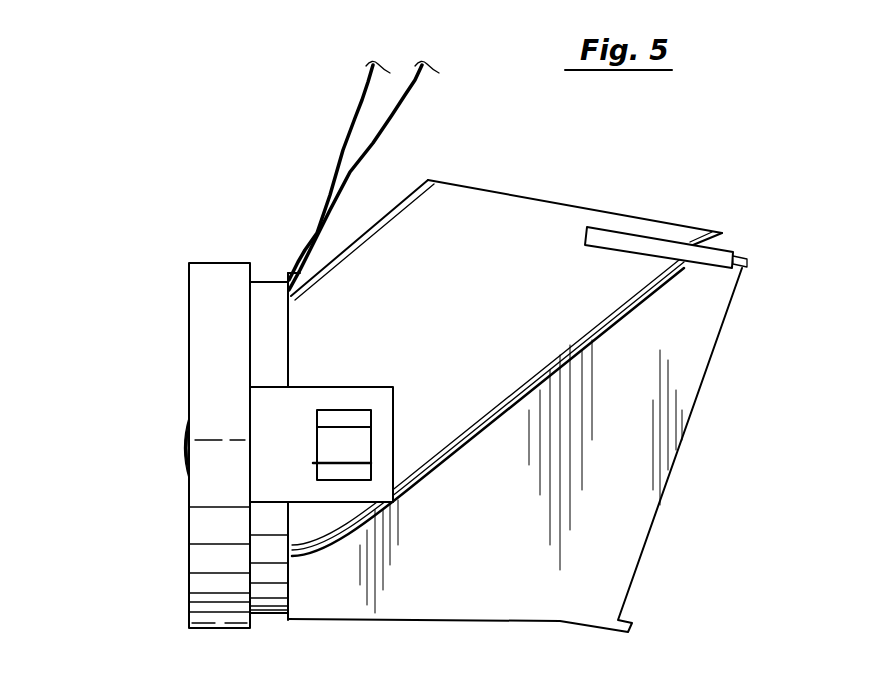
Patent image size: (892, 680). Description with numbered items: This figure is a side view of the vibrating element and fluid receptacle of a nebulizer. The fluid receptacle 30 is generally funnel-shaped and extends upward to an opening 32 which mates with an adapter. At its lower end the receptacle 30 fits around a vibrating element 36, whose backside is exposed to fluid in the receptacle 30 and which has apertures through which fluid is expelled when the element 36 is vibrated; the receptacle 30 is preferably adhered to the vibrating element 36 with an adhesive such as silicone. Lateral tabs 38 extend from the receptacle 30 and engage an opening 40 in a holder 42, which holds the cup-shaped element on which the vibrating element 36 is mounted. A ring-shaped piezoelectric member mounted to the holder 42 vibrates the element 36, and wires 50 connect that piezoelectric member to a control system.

The fluid receptacle 30 is at (642, 435).
The opening 32 is at (585, 207).
The vibrating element 36 is at (182, 458).
The lateral tabs 38 is at (347, 417).
The opening 40 is at (353, 448).
The holder 42 is at (223, 613).
The wires 50 is at (340, 130).